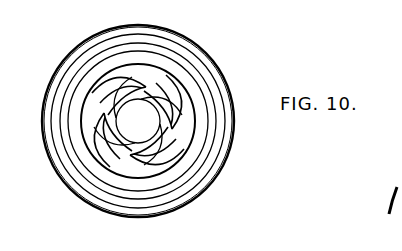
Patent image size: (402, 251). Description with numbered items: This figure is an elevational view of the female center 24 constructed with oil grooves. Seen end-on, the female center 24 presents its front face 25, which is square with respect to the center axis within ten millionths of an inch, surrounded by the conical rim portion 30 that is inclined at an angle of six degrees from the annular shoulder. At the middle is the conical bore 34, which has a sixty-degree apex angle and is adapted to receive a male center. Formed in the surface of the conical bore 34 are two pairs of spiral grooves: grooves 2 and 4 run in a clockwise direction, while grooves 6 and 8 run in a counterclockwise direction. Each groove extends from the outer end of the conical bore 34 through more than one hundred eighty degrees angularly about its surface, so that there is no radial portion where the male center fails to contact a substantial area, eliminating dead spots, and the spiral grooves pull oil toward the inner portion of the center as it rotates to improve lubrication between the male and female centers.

The female center 24 is at (214, 43).
The spiral groove 2 is at (208, 183).
The conical rim portion 30 is at (216, 162).
The spiral groove 8 is at (180, 196).
The front face 25 is at (203, 140).
The spiral groove 6 is at (110, 70).
The spiral groove 4 is at (90, 90).
The conical bore 34 is at (181, 95).